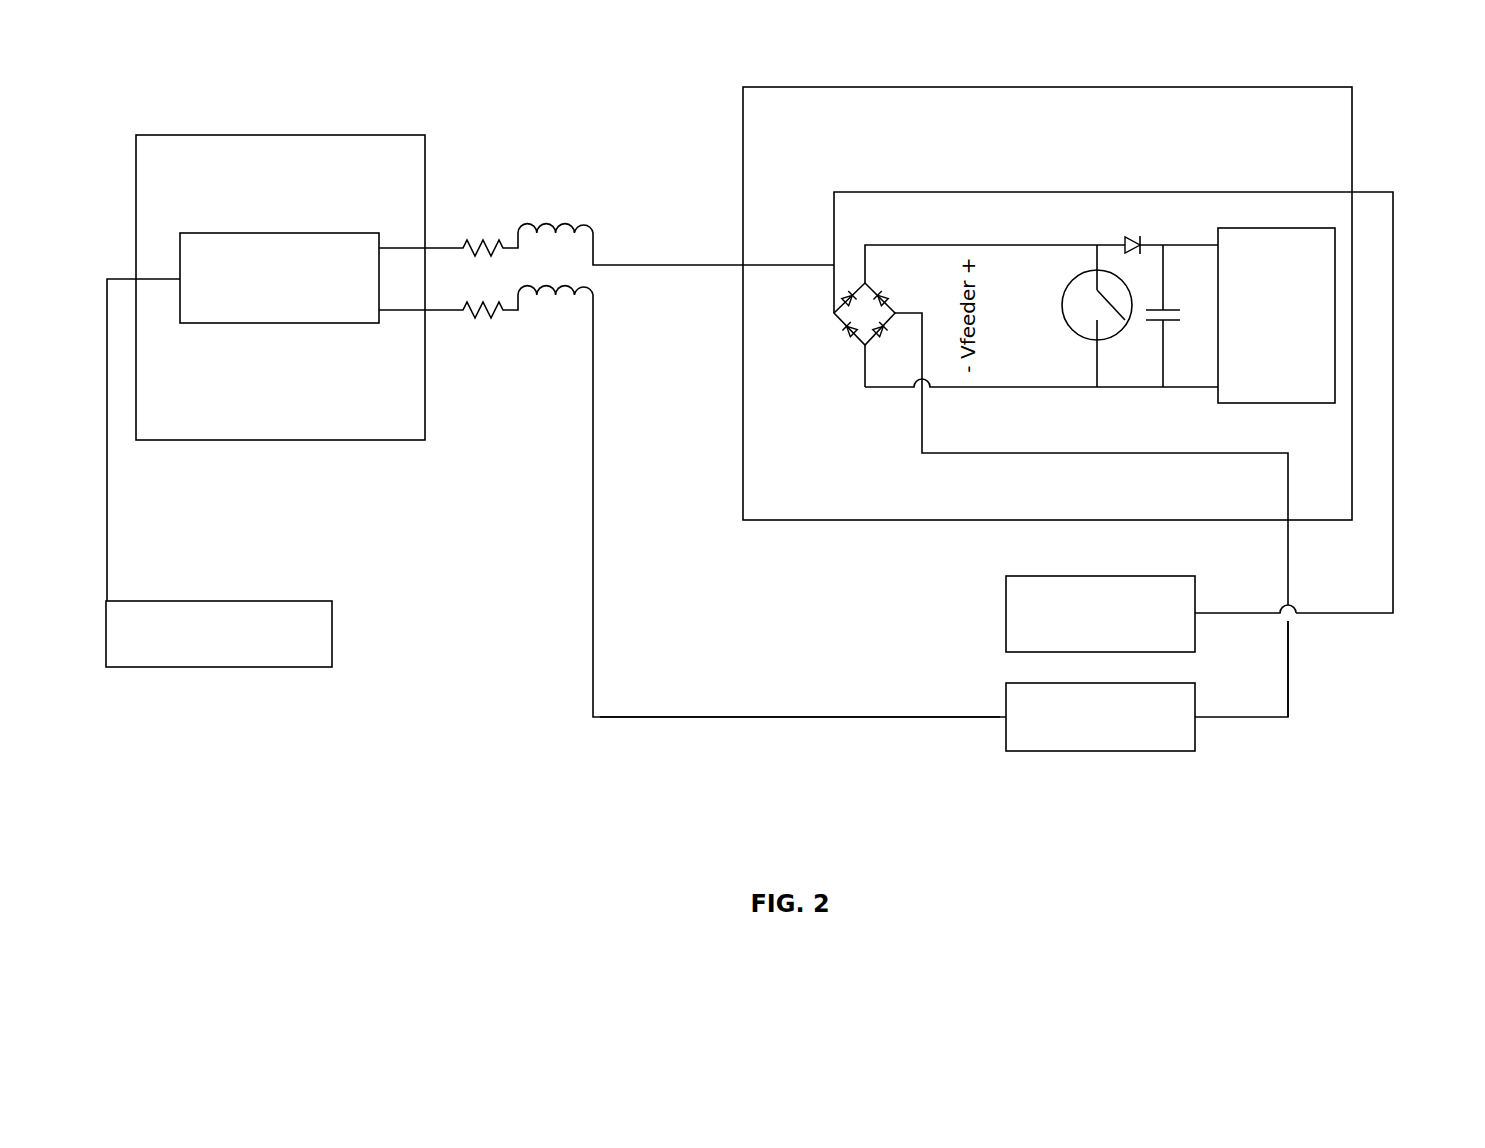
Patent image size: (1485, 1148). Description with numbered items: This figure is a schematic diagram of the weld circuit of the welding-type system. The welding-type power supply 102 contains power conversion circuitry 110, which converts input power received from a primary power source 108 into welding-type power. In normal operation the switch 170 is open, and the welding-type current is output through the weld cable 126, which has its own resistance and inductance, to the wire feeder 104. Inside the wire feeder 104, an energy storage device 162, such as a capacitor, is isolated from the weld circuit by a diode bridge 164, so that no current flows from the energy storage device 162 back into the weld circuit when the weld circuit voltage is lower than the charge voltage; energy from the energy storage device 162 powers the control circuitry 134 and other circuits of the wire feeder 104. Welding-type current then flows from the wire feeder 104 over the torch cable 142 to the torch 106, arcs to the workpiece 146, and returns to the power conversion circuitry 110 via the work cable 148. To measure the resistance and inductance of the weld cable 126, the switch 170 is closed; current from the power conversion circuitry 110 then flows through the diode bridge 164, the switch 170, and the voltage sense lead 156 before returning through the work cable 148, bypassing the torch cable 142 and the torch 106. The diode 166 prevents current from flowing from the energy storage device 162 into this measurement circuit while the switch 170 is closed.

The welding-type power supply 102 is at (260, 200).
The power conversion circuitry 110 is at (311, 319).
The primary power source 108 is at (199, 660).
The weld cable 126 is at (675, 265).
The work cable 148 is at (640, 719).
The wire feeder 104 is at (1027, 154).
The torch cable 142 is at (1393, 303).
The diode bridge 164 is at (834, 313).
The diode 166 is at (1130, 240).
The switch 170 is at (1063, 290).
The energy storage device 162 is at (1170, 314).
The control circuitry 134 is at (1257, 324).
The welding torch 106 is at (1114, 626).
The workpiece 146 is at (1079, 745).
The voltage sense lead 156 is at (1272, 716).